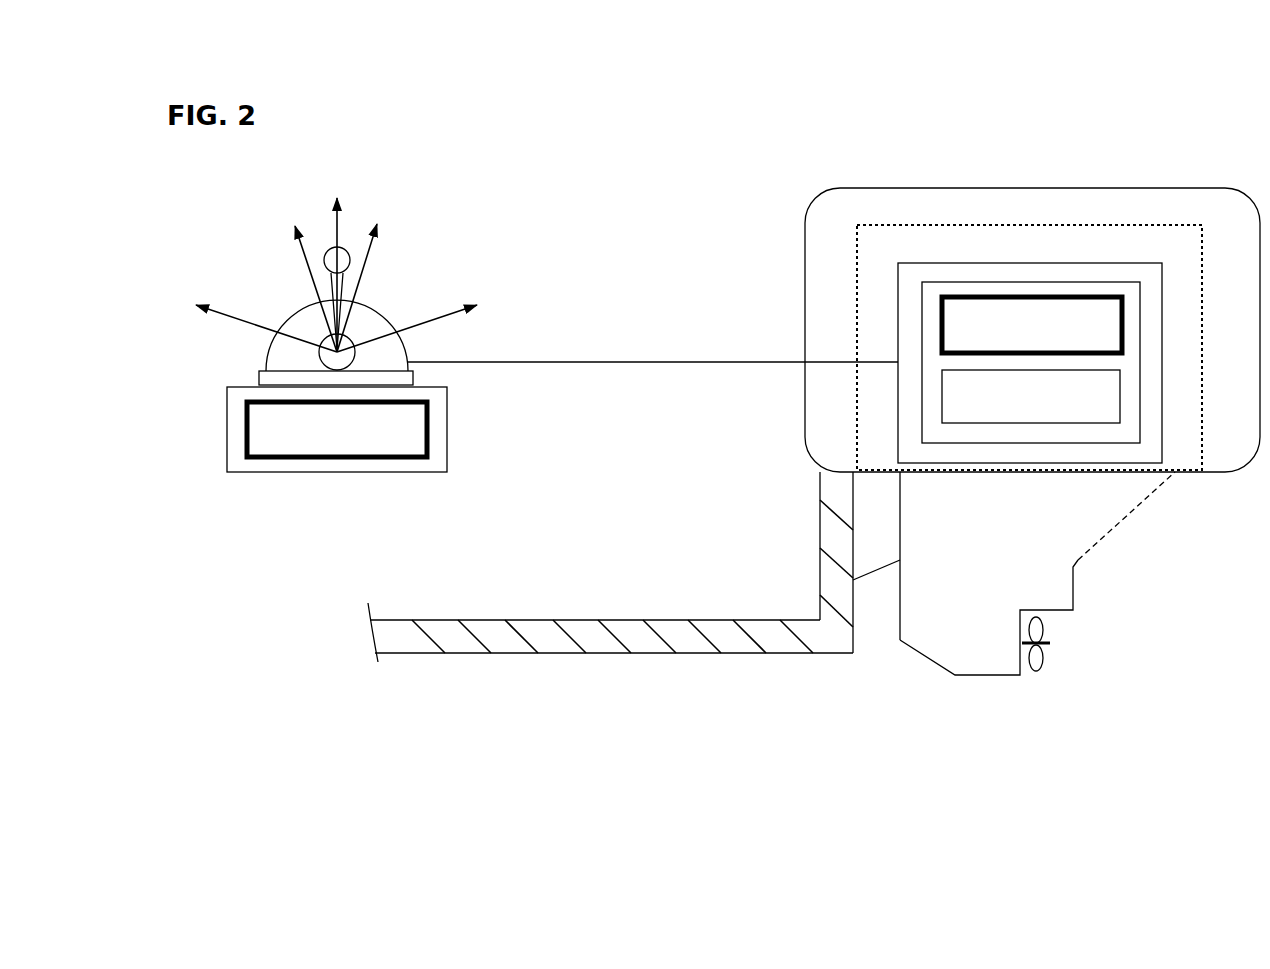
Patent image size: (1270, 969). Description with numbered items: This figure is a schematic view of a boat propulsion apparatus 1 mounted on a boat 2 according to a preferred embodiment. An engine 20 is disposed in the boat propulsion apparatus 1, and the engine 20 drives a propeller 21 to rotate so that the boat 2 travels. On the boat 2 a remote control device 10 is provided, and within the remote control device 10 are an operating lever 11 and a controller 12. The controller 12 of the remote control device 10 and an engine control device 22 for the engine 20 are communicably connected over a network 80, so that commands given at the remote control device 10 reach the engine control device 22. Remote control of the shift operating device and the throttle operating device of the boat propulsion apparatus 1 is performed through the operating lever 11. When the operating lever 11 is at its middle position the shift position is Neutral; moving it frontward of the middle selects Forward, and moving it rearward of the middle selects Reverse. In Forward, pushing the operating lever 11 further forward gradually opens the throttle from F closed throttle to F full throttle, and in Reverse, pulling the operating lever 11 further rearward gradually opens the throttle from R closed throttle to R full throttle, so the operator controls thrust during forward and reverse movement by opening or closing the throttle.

The boat propulsion apparatus 1 is at (1212, 175).
The boat 2 is at (708, 667).
The remote control device 10 is at (427, 263).
The operating lever 11 is at (350, 258).
The controller 12 is at (448, 427).
The engine 20 is at (993, 223).
The propeller 21 is at (1050, 643).
The engine control device 22 is at (1088, 265).
The network 80 is at (652, 358).